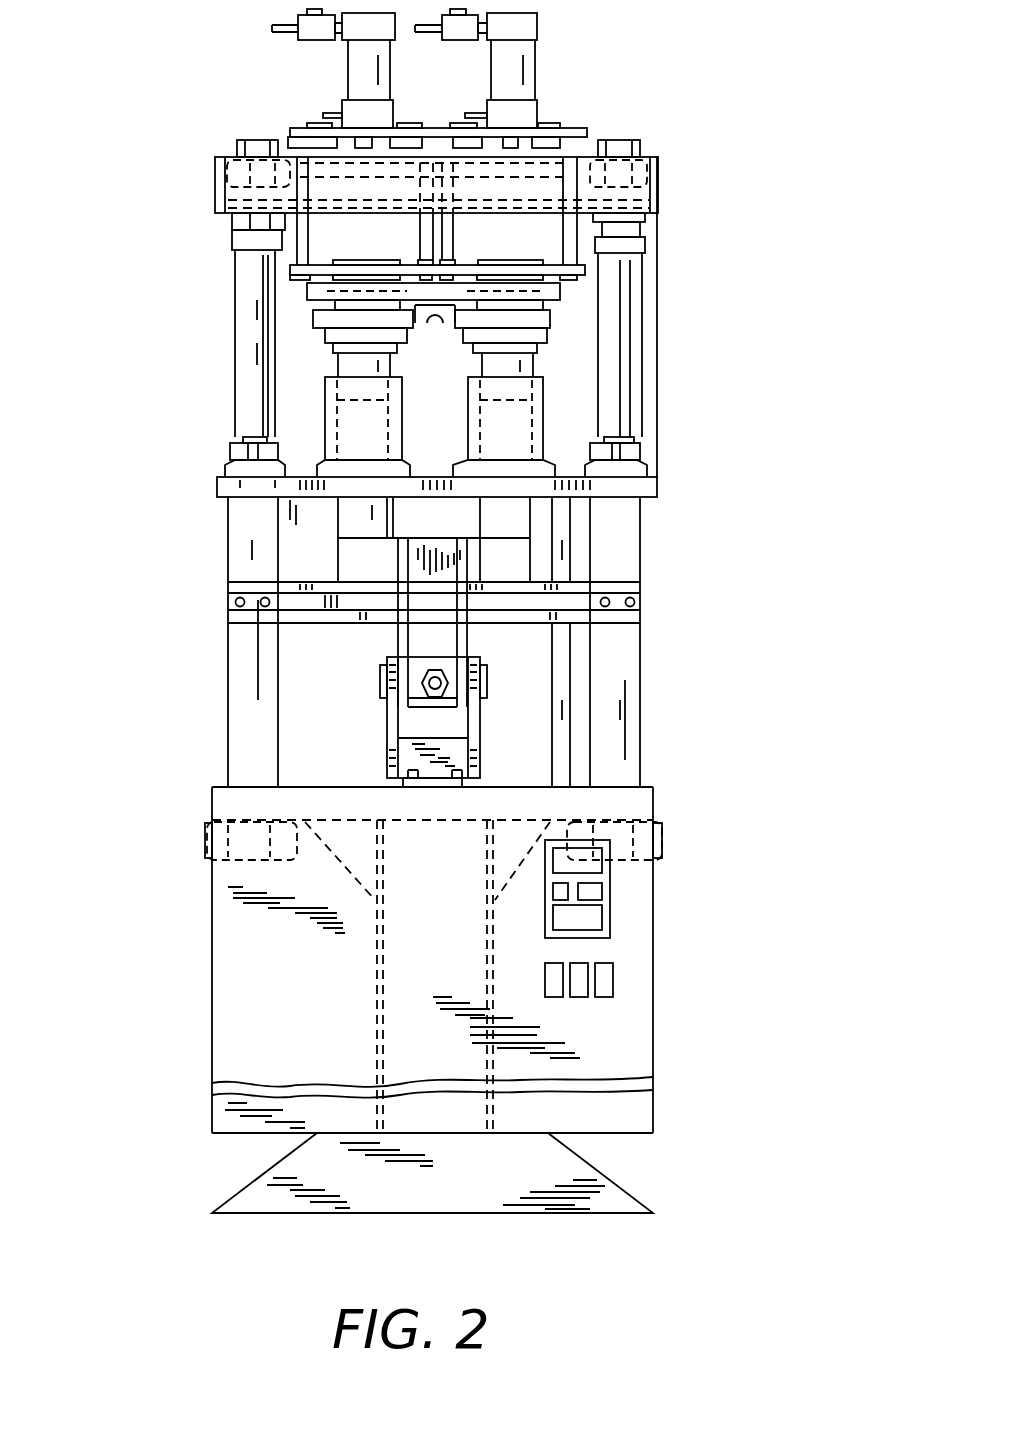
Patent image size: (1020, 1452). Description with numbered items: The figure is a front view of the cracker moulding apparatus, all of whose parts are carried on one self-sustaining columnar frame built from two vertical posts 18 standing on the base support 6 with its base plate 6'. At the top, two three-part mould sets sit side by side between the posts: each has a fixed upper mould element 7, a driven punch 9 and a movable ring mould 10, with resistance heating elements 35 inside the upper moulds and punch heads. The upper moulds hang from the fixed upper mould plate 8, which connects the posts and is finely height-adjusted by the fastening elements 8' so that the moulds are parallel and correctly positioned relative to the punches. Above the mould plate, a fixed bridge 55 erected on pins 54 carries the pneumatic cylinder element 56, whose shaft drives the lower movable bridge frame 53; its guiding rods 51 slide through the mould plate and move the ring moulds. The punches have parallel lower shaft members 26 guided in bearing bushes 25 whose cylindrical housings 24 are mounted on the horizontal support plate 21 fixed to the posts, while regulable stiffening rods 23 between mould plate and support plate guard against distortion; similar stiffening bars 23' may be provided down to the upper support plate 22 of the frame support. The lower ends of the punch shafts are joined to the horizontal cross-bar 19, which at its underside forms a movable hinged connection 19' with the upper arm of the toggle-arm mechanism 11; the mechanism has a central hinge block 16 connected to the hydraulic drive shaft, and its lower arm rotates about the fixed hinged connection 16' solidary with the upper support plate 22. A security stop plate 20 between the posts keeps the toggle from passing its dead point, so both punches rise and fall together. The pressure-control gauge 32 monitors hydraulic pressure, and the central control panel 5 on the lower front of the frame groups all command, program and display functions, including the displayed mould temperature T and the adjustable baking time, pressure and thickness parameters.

The central control panel 5 is at (632, 977).
The base support 6 is at (412, 1130).
The base plate 6' is at (410, 1198).
The fixed upper mould element 7 is at (608, 245).
The upper mould plate 8 is at (478, 202).
The fastening elements 8' is at (486, 165).
The punch 9 is at (553, 310).
The ring mould 10 is at (562, 288).
The toggle-arm mechanism 11 is at (480, 725).
The central hinge block 16 is at (398, 690).
The fixed hinged connection 16' is at (474, 756).
The vertical posts 18 is at (248, 310).
The horizontal cross-bar 19 is at (350, 562).
The movable hinged connection 19' is at (381, 622).
The security stop plate 20 is at (625, 590).
The horizontal support plate 21 is at (235, 488).
The upper support plate 22 is at (637, 805).
The regulable stiffening rods 23 is at (660, 443).
The stiffening bars 23' is at (651, 642).
The cylindrical housings 24 is at (252, 447).
The bearing bushes 25 is at (327, 390).
The lower shaft members 26 is at (350, 363).
The pressure-control gauge 32 is at (290, 268).
The resistance heating elements 35 is at (590, 345).
The guiding rods 51 is at (233, 230).
The lower movable bridge frame 53 is at (305, 188).
The pins 54 is at (310, 147).
The fixed bridge 55 is at (577, 134).
The pneumatic cylinder element 56 is at (537, 31).
The mould temperature T is at (608, 887).